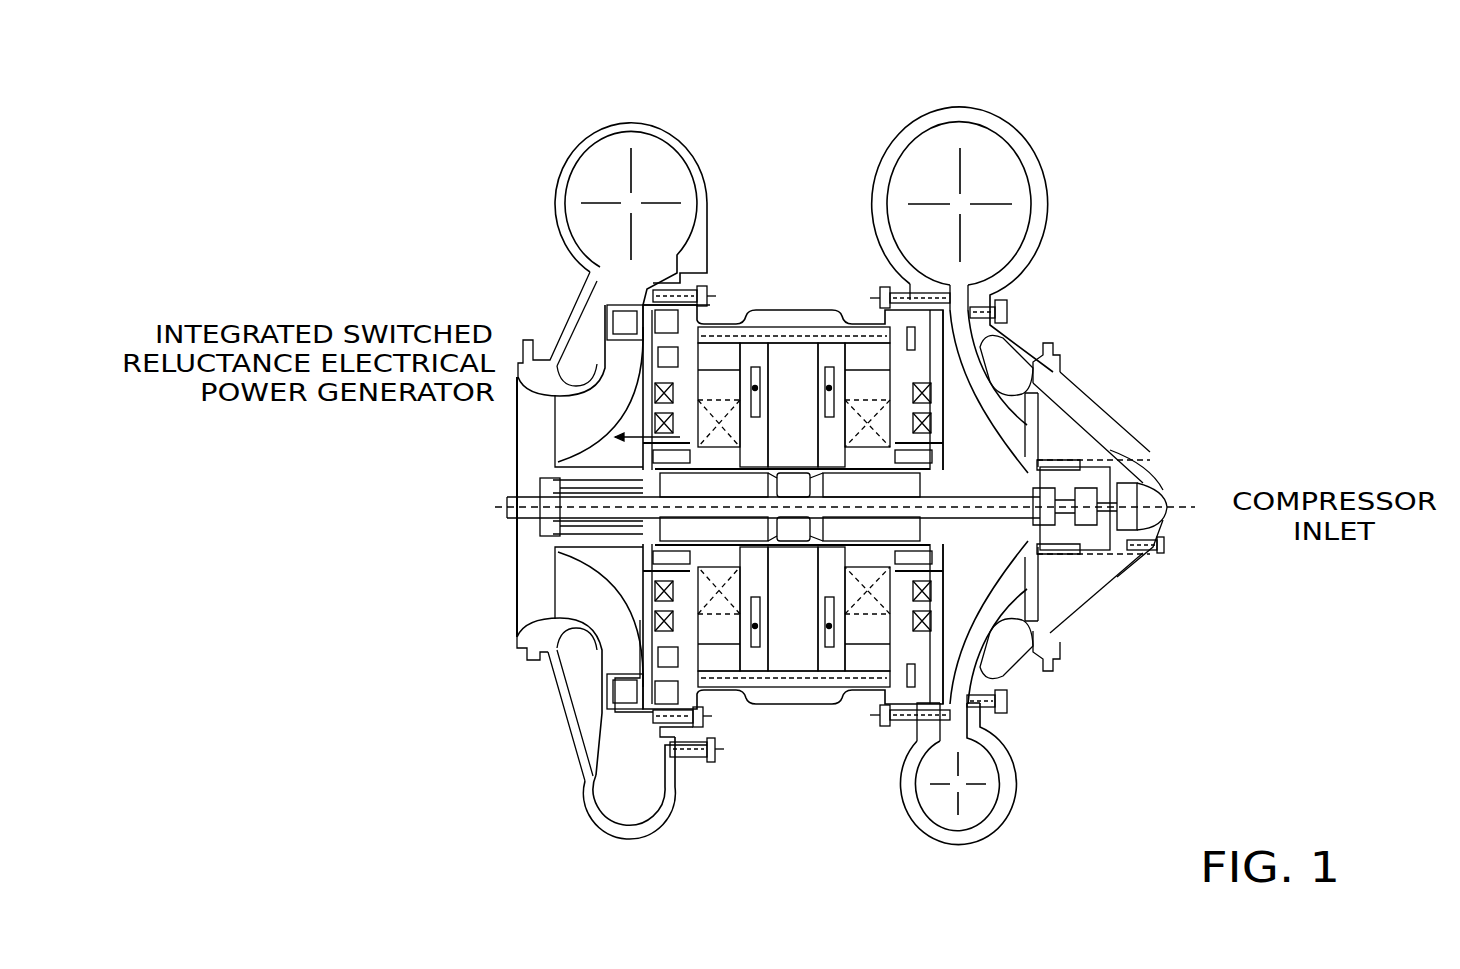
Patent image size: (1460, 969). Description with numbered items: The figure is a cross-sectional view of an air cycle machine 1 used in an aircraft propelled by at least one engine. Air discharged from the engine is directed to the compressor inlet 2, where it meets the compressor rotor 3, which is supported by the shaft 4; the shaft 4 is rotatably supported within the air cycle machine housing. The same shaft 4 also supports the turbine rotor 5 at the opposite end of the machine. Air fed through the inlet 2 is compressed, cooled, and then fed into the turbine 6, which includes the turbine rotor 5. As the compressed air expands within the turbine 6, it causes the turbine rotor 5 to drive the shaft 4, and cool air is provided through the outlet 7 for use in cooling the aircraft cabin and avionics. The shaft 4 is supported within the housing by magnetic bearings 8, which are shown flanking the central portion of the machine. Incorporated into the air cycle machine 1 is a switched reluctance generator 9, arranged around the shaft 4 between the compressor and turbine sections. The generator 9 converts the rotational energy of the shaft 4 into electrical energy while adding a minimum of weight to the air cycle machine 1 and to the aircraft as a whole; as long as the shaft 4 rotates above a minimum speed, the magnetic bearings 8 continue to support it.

The air cycle machine 1 is at (820, 66).
The compressor inlet 2 is at (1180, 484).
The compressor rotor 3 is at (975, 456).
The shaft 4 is at (1008, 518).
The turbine rotor 5 is at (624, 564).
The turbine 6 is at (607, 422).
The outlet 7 is at (488, 550).
The magnetic bearings 8 is at (863, 423).
The switched reluctance generator 9 is at (770, 487).